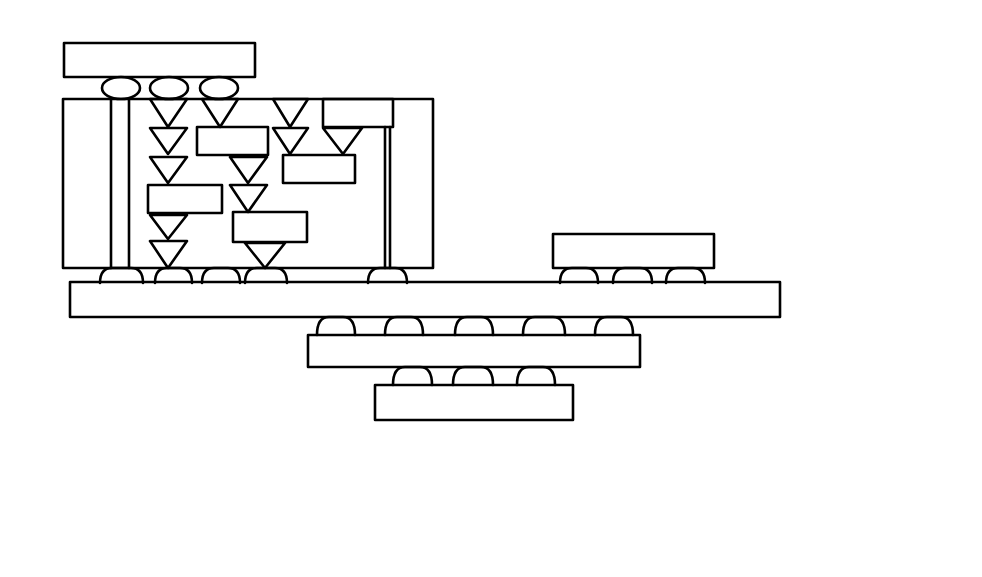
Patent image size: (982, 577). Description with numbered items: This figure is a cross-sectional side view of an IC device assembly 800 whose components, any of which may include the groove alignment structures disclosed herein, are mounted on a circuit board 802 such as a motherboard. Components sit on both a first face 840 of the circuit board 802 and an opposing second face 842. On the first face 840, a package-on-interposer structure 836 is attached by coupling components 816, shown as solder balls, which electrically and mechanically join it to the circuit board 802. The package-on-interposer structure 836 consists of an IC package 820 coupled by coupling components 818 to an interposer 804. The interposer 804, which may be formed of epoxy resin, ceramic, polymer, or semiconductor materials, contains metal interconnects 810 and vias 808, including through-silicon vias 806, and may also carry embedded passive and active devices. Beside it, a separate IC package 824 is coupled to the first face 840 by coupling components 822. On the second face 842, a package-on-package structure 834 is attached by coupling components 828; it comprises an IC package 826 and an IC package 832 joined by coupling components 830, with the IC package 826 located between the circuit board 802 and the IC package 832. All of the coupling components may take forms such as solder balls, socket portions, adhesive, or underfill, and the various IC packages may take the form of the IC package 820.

The IC device assembly 800 is at (618, 112).
The circuit board 802 is at (425, 299).
The interposer 804 is at (277, 153).
The through-silicon vias 806 is at (390, 208).
The vias 808 is at (270, 258).
The metal interconnects 810 is at (300, 202).
The coupling components 816 is at (432, 276).
The coupling components 818 is at (245, 93).
The IC package 820 is at (182, 74).
The coupling components 822 is at (723, 275).
The IC package 824 is at (653, 266).
The IC package 826 is at (495, 364).
The coupling components 828 is at (308, 327).
The coupling components 830 is at (567, 375).
The IC package 832 is at (495, 416).
The package-on-package structure 834 is at (188, 327).
The package-on-interposer structure 836 is at (515, 50).
The first face 840 is at (732, 235).
The second face 842 is at (723, 358).